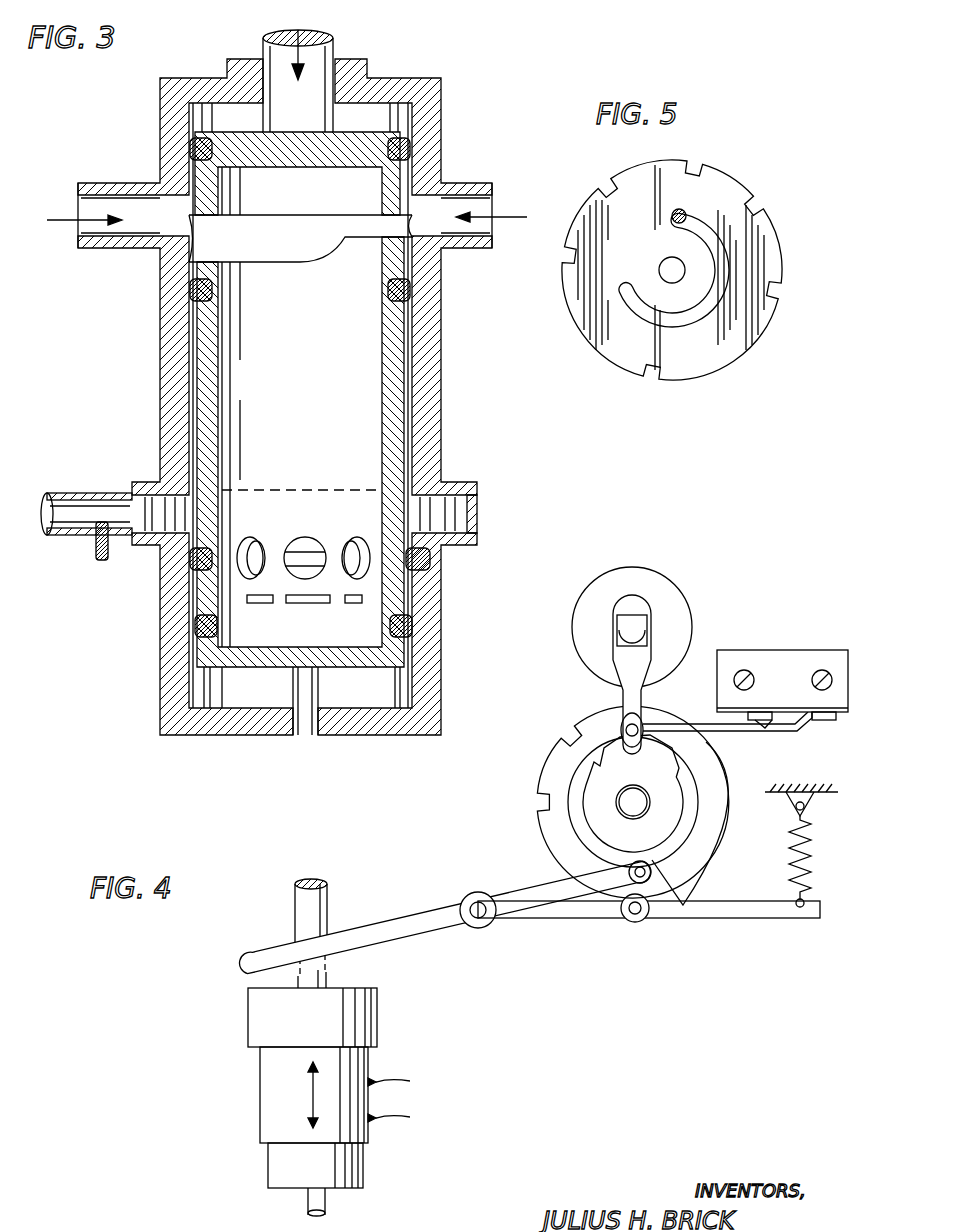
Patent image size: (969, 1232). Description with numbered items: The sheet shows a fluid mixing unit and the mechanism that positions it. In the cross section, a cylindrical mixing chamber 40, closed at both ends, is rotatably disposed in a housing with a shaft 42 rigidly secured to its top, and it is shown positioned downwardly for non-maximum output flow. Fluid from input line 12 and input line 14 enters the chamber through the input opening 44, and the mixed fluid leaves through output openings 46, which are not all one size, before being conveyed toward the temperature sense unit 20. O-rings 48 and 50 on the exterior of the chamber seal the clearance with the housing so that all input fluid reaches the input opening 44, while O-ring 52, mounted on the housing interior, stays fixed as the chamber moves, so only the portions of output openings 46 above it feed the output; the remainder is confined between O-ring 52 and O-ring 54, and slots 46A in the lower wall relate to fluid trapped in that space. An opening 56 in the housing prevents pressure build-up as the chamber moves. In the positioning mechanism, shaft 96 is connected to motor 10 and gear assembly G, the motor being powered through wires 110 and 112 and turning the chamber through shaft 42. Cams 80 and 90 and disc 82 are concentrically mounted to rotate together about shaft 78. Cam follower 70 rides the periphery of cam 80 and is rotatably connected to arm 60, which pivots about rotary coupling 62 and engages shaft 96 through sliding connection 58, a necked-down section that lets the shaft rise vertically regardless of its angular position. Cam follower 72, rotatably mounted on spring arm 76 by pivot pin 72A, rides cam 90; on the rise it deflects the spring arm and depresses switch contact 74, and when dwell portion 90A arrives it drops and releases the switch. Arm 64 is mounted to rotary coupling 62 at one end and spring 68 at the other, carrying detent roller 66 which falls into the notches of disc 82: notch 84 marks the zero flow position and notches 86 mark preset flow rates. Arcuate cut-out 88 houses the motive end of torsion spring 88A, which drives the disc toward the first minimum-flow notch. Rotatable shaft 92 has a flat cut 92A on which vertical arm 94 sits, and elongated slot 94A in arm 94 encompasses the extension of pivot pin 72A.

In FIG. 4, the motor 10 is at (300, 1100).
In FIG. 3, the input line 12 is at (122, 240).
In FIG. 3, the input line 14 is at (490, 230).
In FIG. 3, the temperature sense unit 20 is at (95, 549).
In FIG. 3, the mixing chamber 40 is at (218, 394).
In FIG. 3, the shaft 42 is at (265, 45).
In FIG. 4, the shaft 42 is at (308, 1205).
In FIG. 3, the input opening 44 is at (285, 228).
In FIG. 3, the output openings 46 is at (307, 540).
In FIG. 3, the slots 46A is at (318, 604).
In FIG. 3, the O-ring 48 is at (192, 150).
In FIG. 3, the O-ring 50 is at (192, 290).
In FIG. 3, the O-ring 52 is at (190, 563).
In FIG. 3, the O-ring 54 is at (196, 626).
In FIG. 3, the opening 56 is at (306, 730).
In FIG. 4, the sliding connection 58 is at (326, 950).
In FIG. 4, the arm 60 is at (532, 892).
In FIG. 4, the rotary coupling 62 is at (482, 926).
In FIG. 4, the arm 64 is at (597, 913).
In FIG. 4, the detent roller 66 is at (642, 920).
In FIG. 4, the spring 68 is at (812, 860).
In FIG. 4, the cam follower 70 is at (660, 876).
In FIG. 4, the cam follower 72 is at (650, 723).
In FIG. 4, the pivot pin 72A is at (621, 728).
In FIG. 4, the switch contact 74 is at (806, 722).
In FIG. 4, the spring arm 76 is at (760, 730).
In FIG. 5, the shaft 78 is at (666, 266).
In FIG. 4, the shaft 78 is at (644, 798).
In FIG. 4, the cam 80 is at (723, 844).
In FIG. 5, the disc 82 is at (636, 360).
In FIG. 4, the disc 82 is at (580, 859).
In FIG. 5, the notch 84 is at (652, 378).
In FIG. 5, the notches 86 is at (604, 188).
In FIG. 4, the notches 86 is at (538, 798).
In FIG. 5, the arcuate cut-out 88 is at (726, 258).
In FIG. 5, the torsion spring 88A is at (700, 207).
In FIG. 4, the cam 90 is at (618, 828).
In FIG. 4, the dwell portion 90A is at (592, 758).
In FIG. 4, the rotatable shaft 92 is at (620, 630).
In FIG. 4, the flat cut 92A is at (632, 612).
In FIG. 4, the vertical arm 94 is at (622, 702).
In FIG. 4, the elongated slot 94A is at (626, 733).
In FIG. 4, the shaft 96 is at (322, 975).
In FIG. 4, the wire 110 is at (395, 1082).
In FIG. 4, the wire 112 is at (396, 1118).
In FIG. 4, the gear assembly G is at (276, 1168).